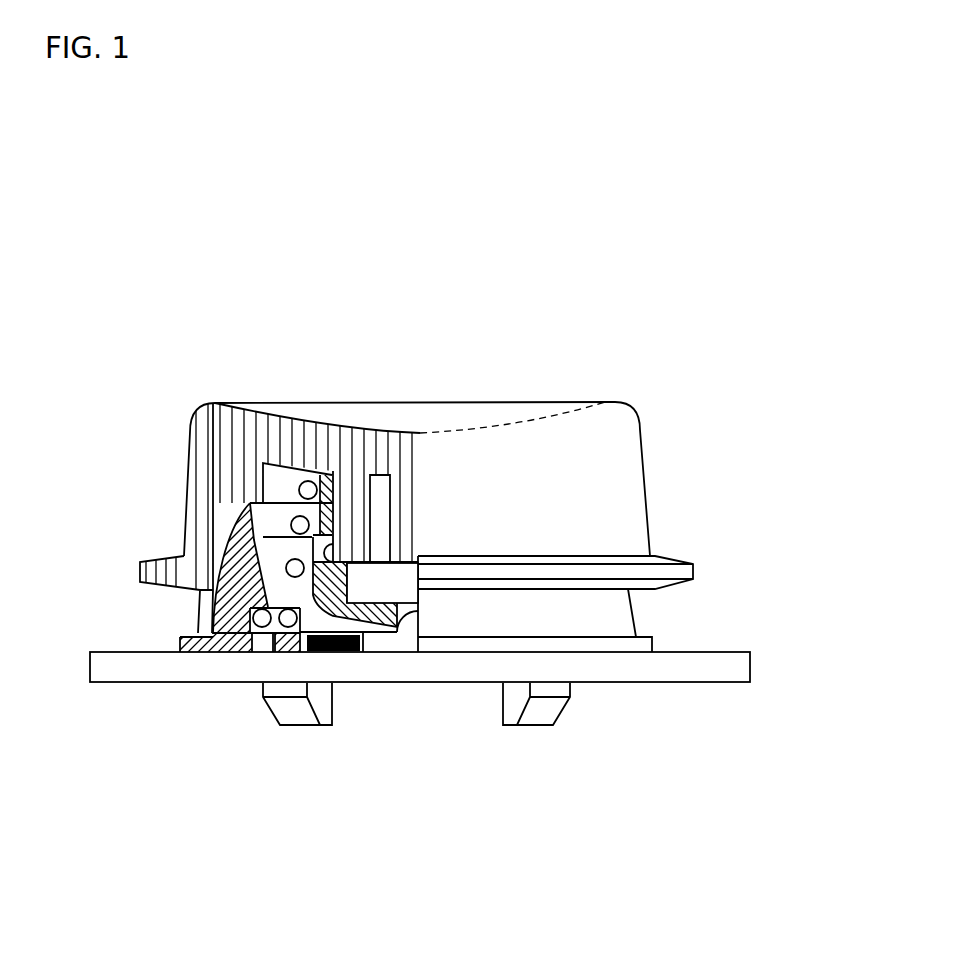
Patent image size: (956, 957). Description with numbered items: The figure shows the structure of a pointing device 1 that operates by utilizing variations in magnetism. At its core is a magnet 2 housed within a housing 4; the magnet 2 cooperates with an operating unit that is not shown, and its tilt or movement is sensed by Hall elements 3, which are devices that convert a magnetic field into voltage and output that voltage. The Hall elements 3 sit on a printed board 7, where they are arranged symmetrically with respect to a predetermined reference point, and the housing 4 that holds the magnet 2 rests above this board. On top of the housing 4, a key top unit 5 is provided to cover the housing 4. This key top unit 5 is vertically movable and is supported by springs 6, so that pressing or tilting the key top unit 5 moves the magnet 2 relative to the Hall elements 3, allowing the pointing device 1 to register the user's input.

The pointing device 1 is at (456, 601).
The magnet 2 is at (418, 600).
The Hall elements 3 is at (345, 650).
The housing 4 is at (305, 622).
The key top unit 5 is at (217, 403).
The springs 6 is at (276, 550).
The printed board 7 is at (687, 663).